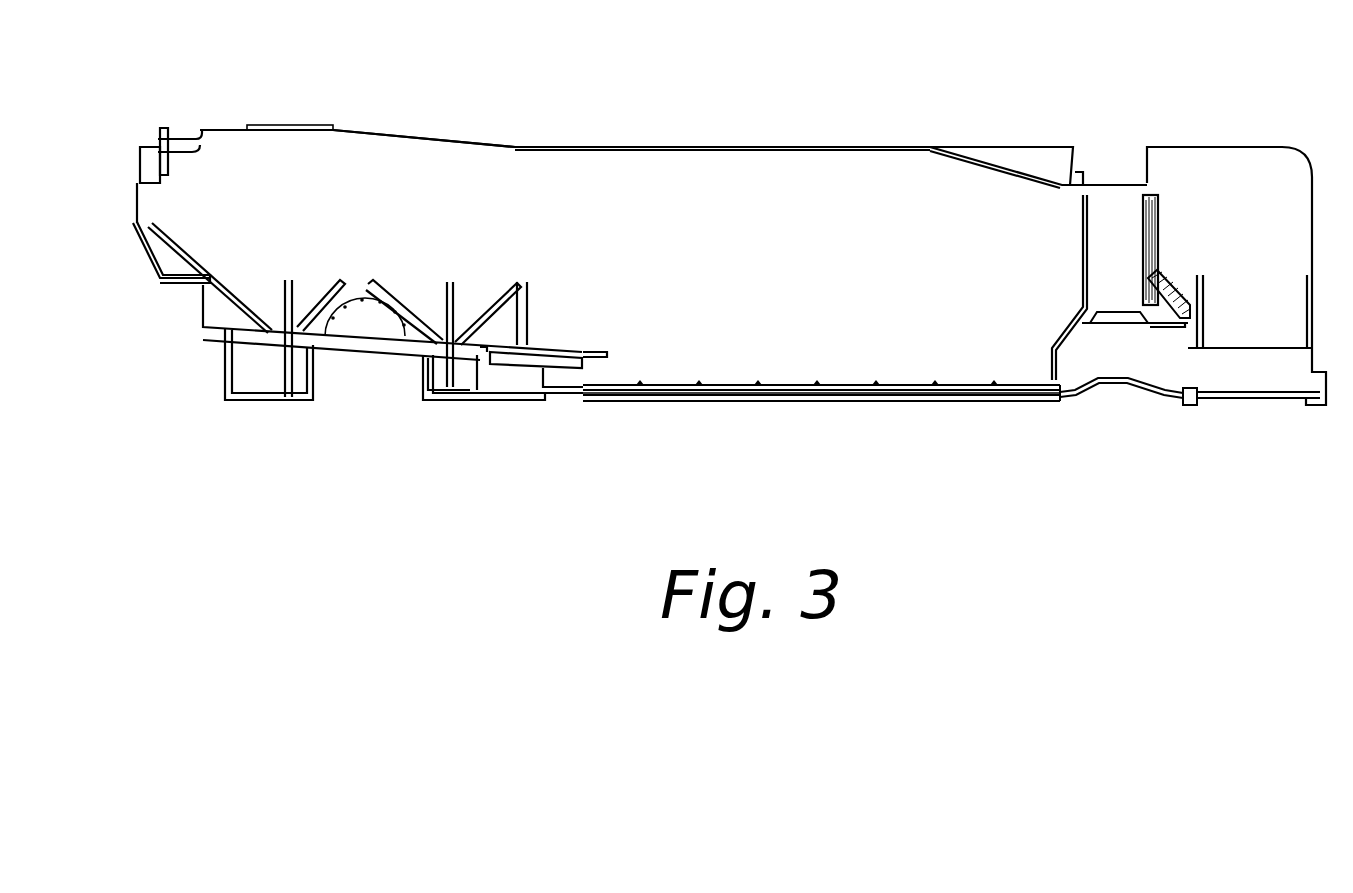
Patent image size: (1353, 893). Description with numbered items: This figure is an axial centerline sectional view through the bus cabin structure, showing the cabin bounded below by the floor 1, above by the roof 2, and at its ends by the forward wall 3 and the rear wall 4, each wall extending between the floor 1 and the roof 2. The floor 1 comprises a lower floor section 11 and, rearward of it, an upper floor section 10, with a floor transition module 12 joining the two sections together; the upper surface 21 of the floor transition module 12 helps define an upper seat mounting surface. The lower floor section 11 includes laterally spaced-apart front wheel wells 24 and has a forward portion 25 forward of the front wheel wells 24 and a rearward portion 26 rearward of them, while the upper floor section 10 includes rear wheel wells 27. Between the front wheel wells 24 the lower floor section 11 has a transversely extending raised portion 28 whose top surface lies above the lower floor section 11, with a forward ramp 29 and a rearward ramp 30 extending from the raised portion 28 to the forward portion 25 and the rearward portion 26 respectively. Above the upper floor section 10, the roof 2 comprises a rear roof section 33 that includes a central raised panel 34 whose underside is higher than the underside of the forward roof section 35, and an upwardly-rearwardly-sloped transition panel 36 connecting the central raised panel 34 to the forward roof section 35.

The floor 1 is at (729, 378).
The roof 2 is at (666, 128).
The forward wall 3 is at (1312, 200).
The rear wall 4 is at (135, 205).
The upper floor section 10 is at (436, 337).
The lower floor section 11 is at (882, 385).
The floor transition module 12 is at (585, 350).
The upper surface 21 is at (540, 350).
The front wheel wells 24 is at (1150, 325).
The forward portion 25 is at (1253, 392).
The rearward portion 26 is at (983, 385).
The rear wheel wells 27 is at (364, 297).
The raised portion 28 is at (1080, 333).
The forward ramp 29 is at (1158, 397).
The rearward ramp 30 is at (1085, 398).
The rear roof section 33 is at (412, 100).
The central raised panel 34 is at (308, 125).
The forward roof section 35 is at (860, 147).
The transition panel 36 is at (428, 137).